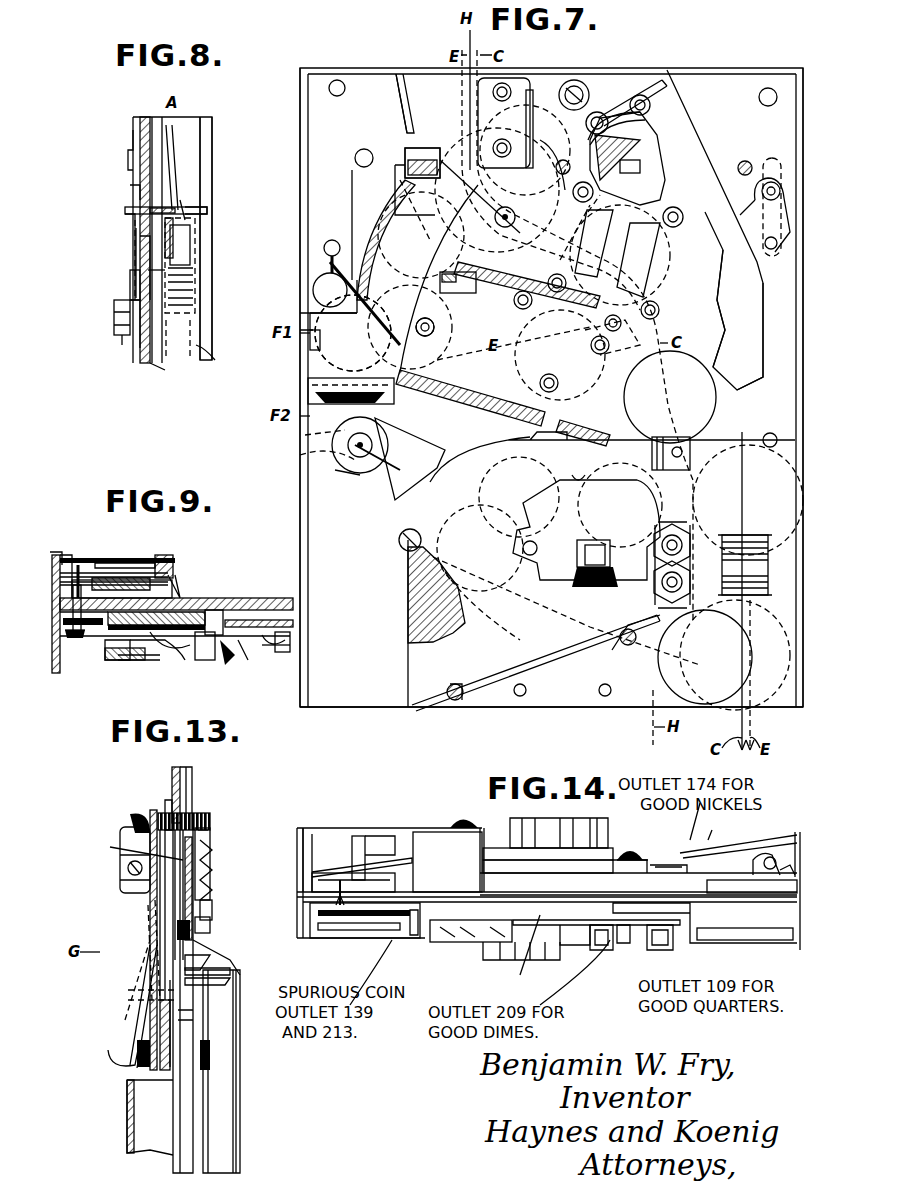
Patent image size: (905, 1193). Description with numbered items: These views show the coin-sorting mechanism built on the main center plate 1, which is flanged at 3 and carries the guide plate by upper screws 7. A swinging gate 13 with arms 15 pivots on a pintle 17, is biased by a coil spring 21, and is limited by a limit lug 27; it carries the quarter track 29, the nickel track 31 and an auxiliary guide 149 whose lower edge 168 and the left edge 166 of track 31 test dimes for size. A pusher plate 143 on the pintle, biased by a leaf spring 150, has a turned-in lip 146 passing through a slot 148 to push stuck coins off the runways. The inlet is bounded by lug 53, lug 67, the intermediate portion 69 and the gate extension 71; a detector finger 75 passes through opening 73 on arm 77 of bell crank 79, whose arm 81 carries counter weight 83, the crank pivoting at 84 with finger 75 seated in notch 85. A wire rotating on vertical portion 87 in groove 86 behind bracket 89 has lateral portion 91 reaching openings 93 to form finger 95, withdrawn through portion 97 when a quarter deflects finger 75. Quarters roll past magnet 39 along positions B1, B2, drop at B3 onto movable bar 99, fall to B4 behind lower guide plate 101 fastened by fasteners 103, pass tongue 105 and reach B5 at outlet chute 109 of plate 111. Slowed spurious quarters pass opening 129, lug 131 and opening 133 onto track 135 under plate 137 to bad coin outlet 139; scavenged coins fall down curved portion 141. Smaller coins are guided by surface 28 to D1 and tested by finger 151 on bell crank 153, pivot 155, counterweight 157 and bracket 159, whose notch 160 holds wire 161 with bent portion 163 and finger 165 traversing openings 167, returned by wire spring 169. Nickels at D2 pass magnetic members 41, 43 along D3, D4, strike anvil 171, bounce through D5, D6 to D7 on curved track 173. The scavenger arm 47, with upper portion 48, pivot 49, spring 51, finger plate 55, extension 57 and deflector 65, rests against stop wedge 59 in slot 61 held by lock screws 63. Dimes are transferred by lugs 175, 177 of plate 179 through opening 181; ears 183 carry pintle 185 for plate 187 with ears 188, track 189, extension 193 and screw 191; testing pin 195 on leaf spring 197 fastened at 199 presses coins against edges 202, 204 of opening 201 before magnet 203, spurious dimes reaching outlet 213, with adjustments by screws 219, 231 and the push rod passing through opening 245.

In FIG. 7, the main center plate 1 is at (692, 82).
In FIG. 8, the main center plate 1 is at (138, 115).
In FIG. 9, the main center plate 1 is at (283, 598).
In FIG. 13, the main center plate 1 is at (172, 778).
In FIG. 14, the main center plate 1 is at (692, 855).
In FIG. 7, the flange 3 is at (301, 98).
In FIG. 8, the flange 3 is at (200, 116).
In FIG. 9, the flange 3 is at (55, 676).
In FIG. 14, the flange 3 is at (298, 838).
In FIG. 7, the upper screws 7 is at (745, 160).
In FIG. 8, the swinging gate 13 is at (166, 368).
In FIG. 9, the swinging gate 13 is at (112, 638).
In FIG. 13, the swinging gate 13 is at (193, 830).
In FIG. 14, the swinging gate 13 is at (395, 870).
In FIG. 8, the arms 15 is at (196, 233).
In FIG. 13, the arms 15 is at (215, 950).
In FIG. 14, the arms 15 is at (385, 845).
In FIG. 14, the pintle 17 is at (768, 857).
In FIG. 14, the coil spring 21 is at (795, 870).
In FIG. 7, the limit lug 27 is at (330, 273).
In FIG. 14, the limit lug 27 is at (362, 836).
In FIG. 7, the guide surface 28 is at (421, 235).
In FIG. 7, the supporting track for quarters 29 is at (496, 282).
In FIG. 7, the supporting track for nickels 31 is at (440, 389).
In FIG. 7, the magnet 39 is at (652, 252).
In FIG. 14, the magnet 39 is at (565, 948).
In FIG. 14, the magnetic member 41 is at (545, 832).
In FIG. 7, the magnetic member 43 is at (602, 368).
In FIG. 14, the magnetic member 43 is at (448, 944).
In FIG. 7, the scavenger arm 47 is at (706, 178).
In FIG. 7, the upper portion of scavenger arm 48 is at (642, 160).
In FIG. 7, the pivot 49 is at (578, 80).
In FIG. 7, the coil spring 51 is at (552, 154).
In FIG. 7, the fixed lug 53 is at (530, 95).
In FIG. 7, the finger plate 55 is at (642, 90).
In FIG. 7, the downward extension 57 is at (752, 352).
In FIG. 7, the adjustable stop wedge 59 is at (745, 210).
In FIG. 7, the slot 61 is at (773, 170).
In FIG. 7, the lock screws 63 is at (777, 240).
In FIG. 7, the anvil or deflector 65 is at (722, 290).
In FIG. 7, the lug 67 is at (399, 100).
In FIG. 7, the intermediate portion of center plate 69 is at (432, 78).
In FIG. 8, the intermediate portion of center plate 69 is at (153, 115).
In FIG. 8, the upward extension of gate 71 is at (175, 125).
In FIG. 7, the opening 73 is at (424, 150).
In FIG. 8, the opening 73 is at (135, 195).
In FIG. 7, the detector finger 75 is at (436, 150).
In FIG. 8, the detector finger 75 is at (210, 208).
In FIG. 8, the upwardly extending arm 77 is at (133, 226).
In FIG. 8, the bell crank 79 is at (140, 268).
In FIG. 8, the laterally extending arm 81 is at (130, 288).
In FIG. 8, the counter weight 83 is at (114, 318).
In FIG. 8, the pivot 84 is at (124, 338).
In FIG. 8, the notch 85 is at (189, 197).
In FIG. 8, the groove 86 is at (136, 245).
In FIG. 7, the vertical wire portion 87 is at (404, 188).
In FIG. 8, the vertical wire portion 87 is at (134, 235).
In FIG. 8, the supporting bracket 89 is at (134, 340).
In FIG. 7, the lower lateral wire portion 91 is at (440, 278).
In FIG. 8, the lower lateral wire portion 91 is at (145, 272).
In FIG. 7, the openings 93 is at (498, 210).
In FIG. 8, the openings 93 is at (195, 262).
In FIG. 7, the wire finger 95 is at (483, 205).
In FIG. 8, the wire finger 95 is at (196, 280).
In FIG. 7, the wire portion 97 is at (404, 162).
In FIG. 8, the wire portion 97 is at (128, 209).
In FIG. 7, the movable bar 99 is at (652, 450).
In FIG. 7, the lower guide plate 101 is at (778, 426).
In FIG. 7, the fasteners 103 is at (404, 536).
In FIG. 14, the fasteners 103 is at (462, 820).
In FIG. 7, the deflecting tongue 105 is at (762, 586).
In FIG. 14, the outlet chute 109 is at (750, 942).
In FIG. 13, the plate 111 is at (130, 1150).
In FIG. 14, the plate 111 is at (519, 945).
In FIG. 7, the opening 129 is at (577, 469).
In FIG. 7, the lug 131 is at (611, 563).
In FIG. 7, the opening 133 is at (590, 553).
In FIG. 7, the track 135 is at (565, 650).
In FIG. 13, the plate 137 is at (240, 1102).
In FIG. 14, the plate 137 is at (428, 832).
In FIG. 7, the bad coin outlet 139 is at (350, 706).
In FIG. 13, the bad coin outlet 139 is at (228, 1145).
In FIG. 14, the bad coin outlet 139 is at (335, 827).
In FIG. 7, the outside curved portion 141 is at (460, 470).
In FIG. 8, the pusher plate 143 is at (222, 355).
In FIG. 9, the pusher plate 143 is at (280, 660).
In FIG. 8, the turned-in lip 146 is at (185, 362).
In FIG. 9, the turned-in lip 146 is at (178, 660).
In FIG. 9, the slot 148 is at (115, 662).
In FIG. 7, the auxiliary guide 149 is at (365, 225).
In FIG. 9, the auxiliary guide 149 is at (113, 656).
In FIG. 14, the leaf spring 150 is at (795, 830).
In FIG. 7, the finger 151 is at (470, 292).
In FIG. 9, the finger 151 is at (220, 610).
In FIG. 13, the finger 151 is at (194, 795).
In FIG. 9, the bell crank 153 is at (235, 661).
In FIG. 13, the bell crank 153 is at (210, 850).
In FIG. 9, the pivot 155 is at (205, 662).
In FIG. 13, the pivot 155 is at (212, 914).
In FIG. 9, the counterweight 157 is at (128, 664).
In FIG. 9, the bracket 159 is at (287, 645).
In FIG. 13, the bracket 159 is at (212, 934).
In FIG. 9, the notch 160 is at (245, 604).
In FIG. 13, the notch 160 is at (212, 858).
In FIG. 9, the wire 161 is at (190, 610).
In FIG. 9, the bent portion 163 is at (245, 662).
In FIG. 13, the bent portion 163 is at (210, 826).
In FIG. 7, the finger portion 165 is at (421, 338).
In FIG. 9, the finger portion 165 is at (163, 658).
In FIG. 13, the finger portion 165 is at (131, 850).
In FIG. 7, the left edge / slope 166 is at (353, 333).
In FIG. 7, the openings 167 is at (419, 312).
In FIG. 7, the lower edge 168 is at (320, 310).
In FIG. 9, the wire spring 169 is at (270, 650).
In FIG. 13, the wire spring 169 is at (212, 884).
In FIG. 7, the anvil 171 is at (656, 540).
In FIG. 7, the curved track 173 is at (458, 600).
In FIG. 7, the lug 175 is at (320, 378).
In FIG. 13, the lug 175 is at (210, 905).
In FIG. 7, the lug 177 is at (320, 396).
In FIG. 13, the lug 177 is at (212, 962).
In FIG. 14, the lug 177 is at (355, 876).
In FIG. 13, the plate 179 is at (190, 1018).
In FIG. 7, the opening 181 is at (353, 333).
In FIG. 13, the opening 181 is at (166, 800).
In FIG. 9, the ears 183 is at (56, 552).
In FIG. 13, the ears 183 is at (122, 828).
In FIG. 9, the horizontal pintle 185 is at (125, 558).
In FIG. 13, the horizontal pintle 185 is at (122, 880).
In FIG. 14, the horizontal pintle 185 is at (375, 925).
In FIG. 9, the plate 187 is at (160, 558).
In FIG. 13, the plate 187 is at (160, 920).
In FIG. 9, the ears 188 is at (163, 555).
In FIG. 13, the ears 188 is at (128, 868).
In FIG. 13, the lower track or runway 189 is at (130, 1030).
In FIG. 9, the screw 191 is at (78, 640).
In FIG. 13, the screw 191 is at (205, 825).
In FIG. 7, the extension 193 is at (318, 284).
In FIG. 9, the extension 193 is at (78, 563).
In FIG. 13, the extension 193 is at (158, 815).
In FIG. 7, the testing pin 195 is at (368, 452).
In FIG. 9, the testing pin 195 is at (115, 578).
In FIG. 13, the testing pin 195 is at (150, 975).
In FIG. 7, the leaf spring 197 is at (340, 455).
In FIG. 13, the leaf spring 197 is at (152, 920).
In FIG. 9, the fastening 199 is at (95, 585).
In FIG. 13, the fastening 199 is at (138, 818).
In FIG. 14, the fastening 199 is at (335, 915).
In FIG. 7, the opening 201 is at (360, 475).
In FIG. 13, the opening 201 is at (232, 982).
In FIG. 7, the bottom edge 202 is at (345, 472).
In FIG. 13, the bottom edge 202 is at (158, 1012).
In FIG. 14, the magnet 203 is at (490, 962).
In FIG. 7, the top edge 204 is at (330, 436).
In FIG. 13, the top edge 204 is at (232, 970).
In FIG. 14, the spurious 10¢ coin outlet 213 is at (400, 933).
In FIG. 14, the screw 219 is at (600, 950).
In FIG. 14, the holding screw 231 is at (672, 950).
In FIG. 7, the opening 245 is at (593, 224).
In FIG. 7, the quarter position B1 is at (525, 151).
In FIG. 7, the quarter position B2 is at (660, 280).
In FIG. 7, the quarter position B3 is at (712, 425).
In FIG. 7, the quarter position B4 is at (796, 487).
In FIG. 7, the quarter position B5 is at (783, 627).
In FIG. 7, the nickel position D1 is at (497, 190).
In FIG. 7, the nickel position D2 is at (448, 322).
In FIG. 9, the nickel position D2 is at (176, 578).
In FIG. 7, the nickel position D3 is at (570, 355).
In FIG. 7, the nickel position D4 is at (620, 505).
In FIG. 7, the nickel position D5 is at (519, 497).
In FIG. 7, the nickel position D6 is at (480, 548).
In FIG. 7, the nickel position D7 is at (720, 657).